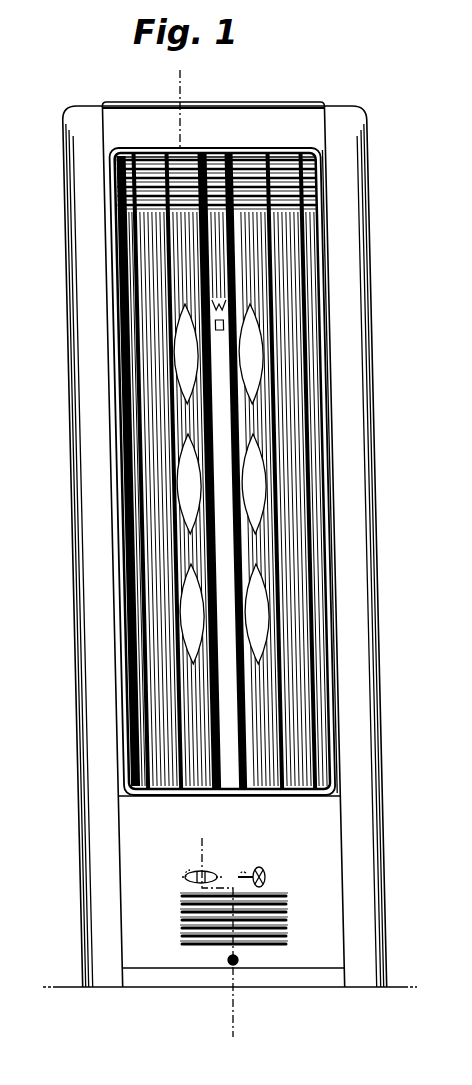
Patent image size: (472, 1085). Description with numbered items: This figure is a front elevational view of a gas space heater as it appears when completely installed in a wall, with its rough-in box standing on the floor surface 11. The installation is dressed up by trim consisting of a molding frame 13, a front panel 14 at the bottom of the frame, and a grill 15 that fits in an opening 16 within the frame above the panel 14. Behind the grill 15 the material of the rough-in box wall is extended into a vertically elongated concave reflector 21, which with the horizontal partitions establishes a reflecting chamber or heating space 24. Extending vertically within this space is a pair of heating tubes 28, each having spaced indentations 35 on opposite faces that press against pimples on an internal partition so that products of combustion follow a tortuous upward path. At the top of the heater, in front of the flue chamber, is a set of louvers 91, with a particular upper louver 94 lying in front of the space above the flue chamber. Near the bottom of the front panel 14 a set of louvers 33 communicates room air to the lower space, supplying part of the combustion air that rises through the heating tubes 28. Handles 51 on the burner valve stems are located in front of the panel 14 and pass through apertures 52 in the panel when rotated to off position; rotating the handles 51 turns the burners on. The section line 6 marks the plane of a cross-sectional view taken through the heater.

The section line 6- 6 is at (170, 66).
The floor surface 11 is at (68, 985).
The molding frame 13 is at (68, 171).
The front panel 14 is at (136, 840).
The grill 15 is at (120, 707).
The opening 16 is at (330, 500).
The concave reflector 21 is at (292, 628).
The reflecting chamber 24 is at (317, 684).
The heating tubes 28 is at (165, 566).
The louvers 33 is at (180, 920).
The indentations 35 is at (185, 341).
The handle 51 is at (207, 872).
The apertures 52 is at (220, 878).
The louvers 91 is at (243, 173).
The upper louver 94 is at (277, 163).